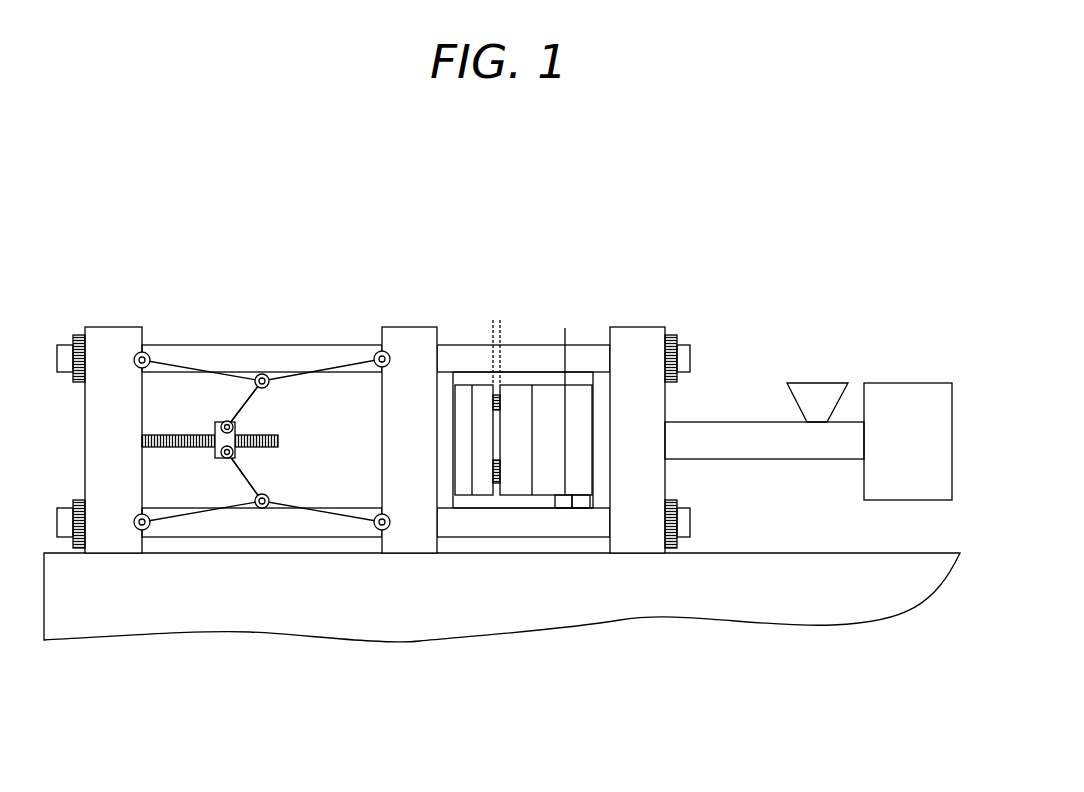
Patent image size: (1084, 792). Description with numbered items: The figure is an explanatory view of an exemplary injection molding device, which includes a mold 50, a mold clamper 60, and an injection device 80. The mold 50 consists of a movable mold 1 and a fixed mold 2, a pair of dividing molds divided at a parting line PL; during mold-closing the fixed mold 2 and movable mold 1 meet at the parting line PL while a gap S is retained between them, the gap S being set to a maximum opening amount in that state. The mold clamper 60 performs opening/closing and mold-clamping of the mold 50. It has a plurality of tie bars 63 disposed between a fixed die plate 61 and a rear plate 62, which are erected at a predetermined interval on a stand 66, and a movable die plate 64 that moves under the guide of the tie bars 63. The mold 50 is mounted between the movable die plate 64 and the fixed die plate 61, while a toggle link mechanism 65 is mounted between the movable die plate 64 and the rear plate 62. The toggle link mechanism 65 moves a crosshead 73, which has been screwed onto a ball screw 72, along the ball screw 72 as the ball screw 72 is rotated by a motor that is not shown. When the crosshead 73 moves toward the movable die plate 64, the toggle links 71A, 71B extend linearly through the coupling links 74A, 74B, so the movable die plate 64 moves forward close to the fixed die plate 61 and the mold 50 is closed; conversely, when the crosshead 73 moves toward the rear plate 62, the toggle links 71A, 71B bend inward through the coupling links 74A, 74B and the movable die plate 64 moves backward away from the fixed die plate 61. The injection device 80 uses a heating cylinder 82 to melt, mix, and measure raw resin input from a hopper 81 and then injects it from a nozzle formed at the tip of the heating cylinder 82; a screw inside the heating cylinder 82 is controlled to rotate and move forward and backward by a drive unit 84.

The movable mold 1 is at (550, 397).
The fixed mold 2 is at (578, 397).
The mold 50 is at (531, 366).
The mold clamper 60 is at (254, 292).
The fixed die plate 61 is at (638, 340).
The rear plate 62 is at (115, 340).
The tie bar 63 is at (312, 357).
The movable die plate 64 is at (408, 340).
The toggle link mechanism 65 is at (262, 440).
The stand 66 is at (207, 597).
The toggle link 71A is at (272, 379).
The toggle link 71B is at (272, 503).
The ball screw 72 is at (263, 433).
The crosshead 73 is at (236, 455).
The coupling link 74A is at (253, 402).
The coupling link 74B is at (248, 478).
The injection device 80 is at (866, 293).
The hopper 81 is at (819, 393).
The heating cylinder 82 is at (755, 433).
The drive unit 84 is at (910, 393).
The gap S is at (520, 332).
The parting line PL is at (565, 399).